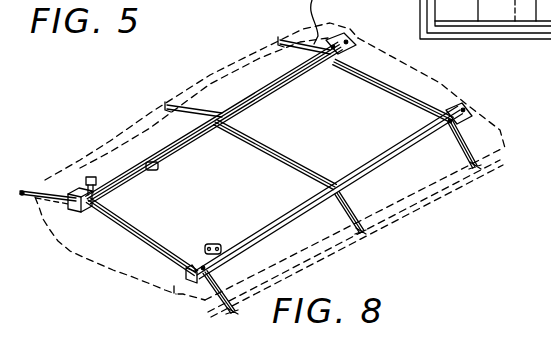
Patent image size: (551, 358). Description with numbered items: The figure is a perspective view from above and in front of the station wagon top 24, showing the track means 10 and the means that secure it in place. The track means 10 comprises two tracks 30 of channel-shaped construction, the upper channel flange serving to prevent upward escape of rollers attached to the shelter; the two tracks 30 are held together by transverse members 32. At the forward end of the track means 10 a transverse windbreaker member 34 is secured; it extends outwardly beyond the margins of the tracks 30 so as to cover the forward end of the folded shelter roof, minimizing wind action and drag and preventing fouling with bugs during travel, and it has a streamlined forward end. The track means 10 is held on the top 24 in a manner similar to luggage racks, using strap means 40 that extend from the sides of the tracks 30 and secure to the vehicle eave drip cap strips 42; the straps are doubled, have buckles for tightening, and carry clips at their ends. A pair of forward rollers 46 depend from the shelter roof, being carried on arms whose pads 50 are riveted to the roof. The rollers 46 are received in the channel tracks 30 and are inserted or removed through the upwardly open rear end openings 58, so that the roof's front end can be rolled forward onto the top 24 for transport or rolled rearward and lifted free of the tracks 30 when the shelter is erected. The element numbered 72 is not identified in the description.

The track means 10 is at (257, 83).
The top 24 is at (310, 139).
The tracks 30 is at (342, 38).
The transverse members 32 is at (386, 92).
The transverse windbreaker member 34 is at (123, 262).
The strap means 40 is at (190, 107).
The eave drip cap strips 42 is at (208, 80).
The forward rollers 46 is at (98, 204).
The pads 50 is at (152, 168).
The rear end openings 58 is at (453, 108).
The connector plate 72 is at (346, 41).